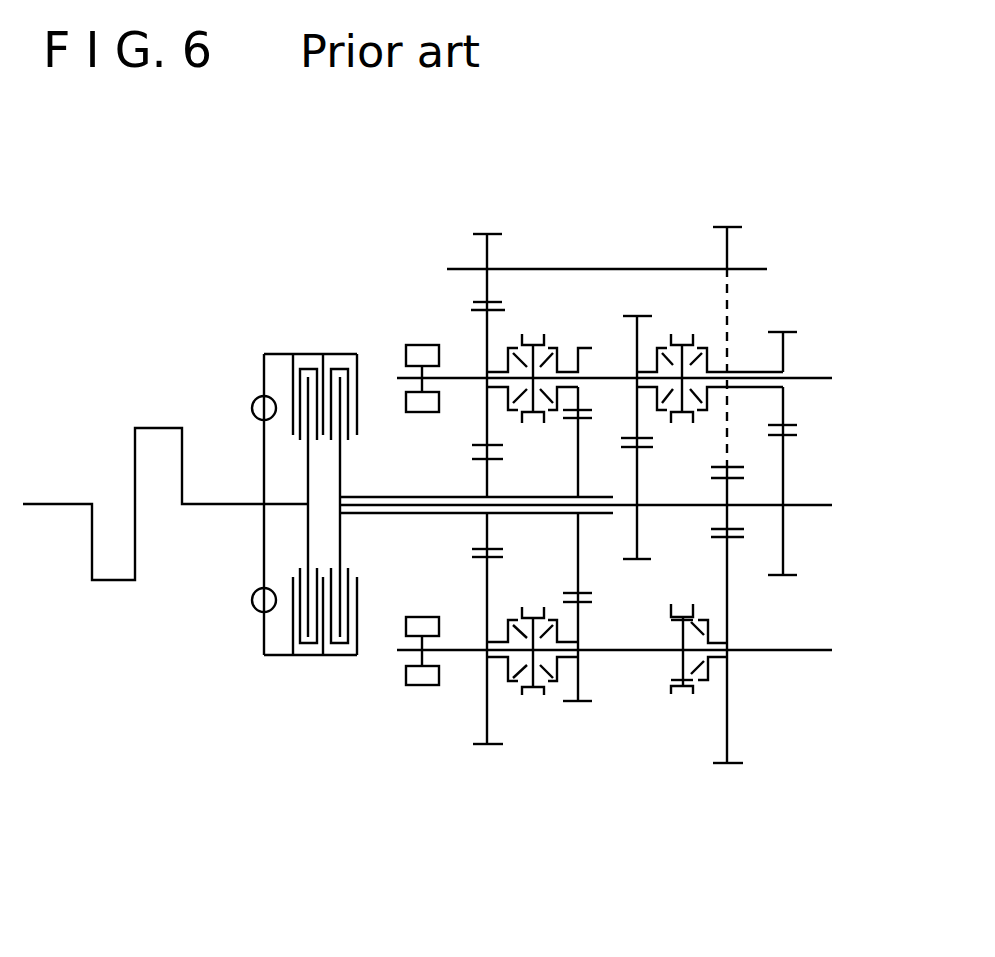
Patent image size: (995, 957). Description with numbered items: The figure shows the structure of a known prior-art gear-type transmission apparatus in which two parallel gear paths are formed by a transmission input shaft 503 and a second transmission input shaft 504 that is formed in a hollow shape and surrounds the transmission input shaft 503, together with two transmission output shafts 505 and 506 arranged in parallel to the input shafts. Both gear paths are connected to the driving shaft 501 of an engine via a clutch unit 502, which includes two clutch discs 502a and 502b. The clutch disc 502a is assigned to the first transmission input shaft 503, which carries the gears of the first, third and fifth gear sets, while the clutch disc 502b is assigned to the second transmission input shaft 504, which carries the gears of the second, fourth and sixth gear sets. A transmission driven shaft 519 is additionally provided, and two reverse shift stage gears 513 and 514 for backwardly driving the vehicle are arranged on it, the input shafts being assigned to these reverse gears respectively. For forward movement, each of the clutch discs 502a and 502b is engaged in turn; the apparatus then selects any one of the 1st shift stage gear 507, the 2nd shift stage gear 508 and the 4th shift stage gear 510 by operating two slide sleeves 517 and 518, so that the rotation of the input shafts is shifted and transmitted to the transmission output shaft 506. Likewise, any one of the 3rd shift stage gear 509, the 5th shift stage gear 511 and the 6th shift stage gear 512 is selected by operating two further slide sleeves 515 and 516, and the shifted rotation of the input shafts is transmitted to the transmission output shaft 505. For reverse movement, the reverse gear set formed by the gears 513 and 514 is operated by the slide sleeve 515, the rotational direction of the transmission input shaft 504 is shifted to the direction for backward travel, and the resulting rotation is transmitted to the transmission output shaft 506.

The driving shaft 501 is at (210, 506).
The clutch unit 502 is at (258, 343).
The clutch disc 502a is at (306, 368).
The clutch disc 502b is at (341, 370).
The transmission input shaft 503 is at (806, 504).
The transmission input shaft 504 is at (373, 514).
The transmission output shaft 505 is at (808, 377).
The transmission output shaft 506 is at (806, 649).
The 1st shift stage gear 507 is at (727, 776).
The 2nd shift stage gear 508 is at (487, 757).
The 3rd shift stage gear 509 is at (637, 302).
The 4th shift stage gear 510 is at (578, 714).
The 5th shift stage gear 511 is at (783, 318).
The 6th shift stage gear 512 is at (578, 340).
The reverse shift stage gear 513 is at (727, 213).
The reverse shift stage gear 514 is at (487, 222).
The slide sleeve 515 is at (533, 333).
The slide sleeve 516 is at (682, 333).
The slide sleeve 517 is at (532, 697).
The slide sleeve 518 is at (684, 697).
The transmission driven shaft 519 is at (470, 267).